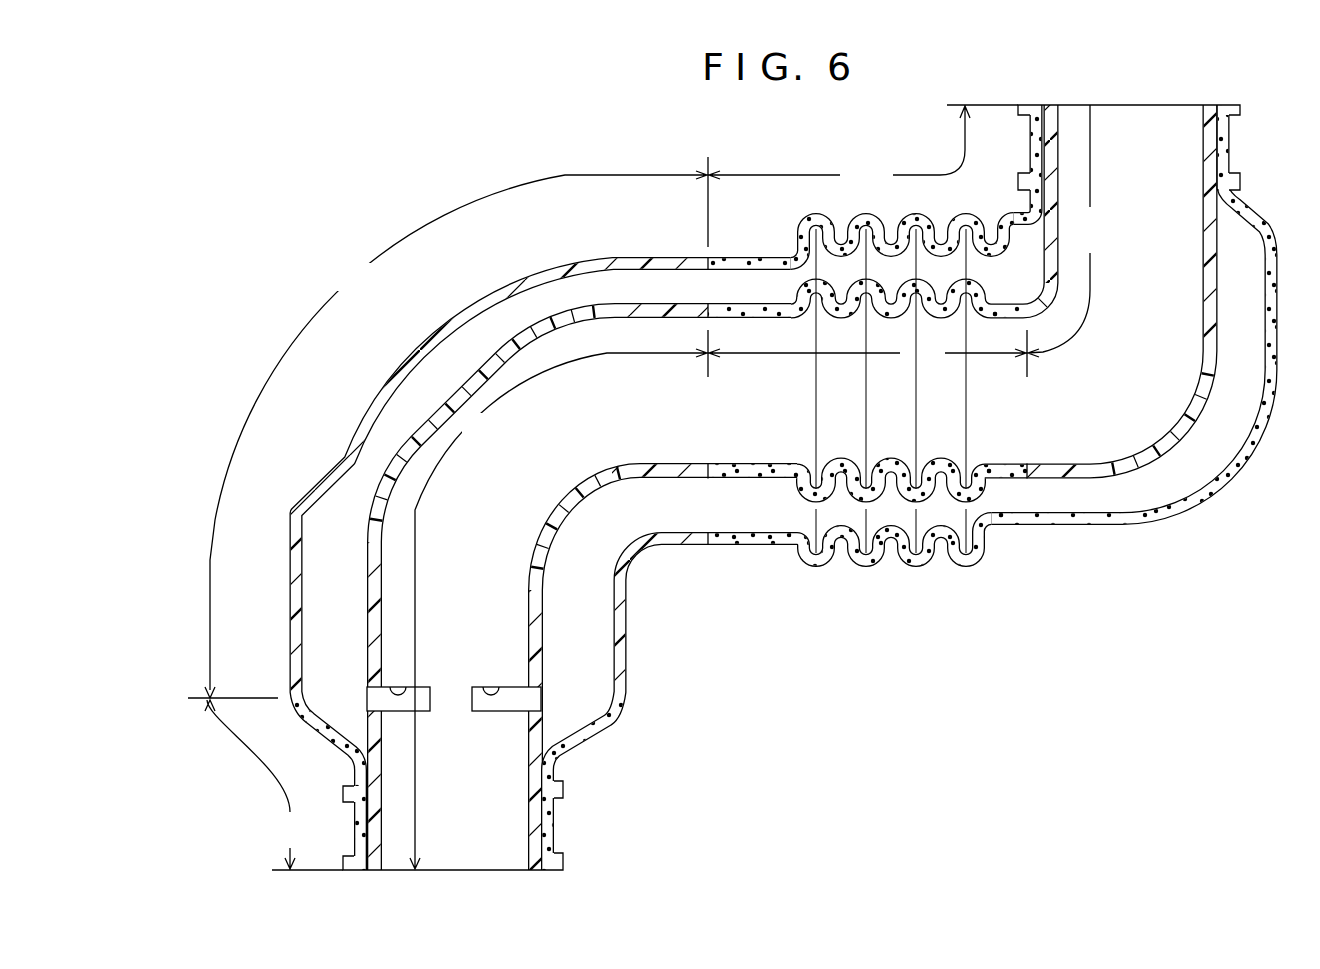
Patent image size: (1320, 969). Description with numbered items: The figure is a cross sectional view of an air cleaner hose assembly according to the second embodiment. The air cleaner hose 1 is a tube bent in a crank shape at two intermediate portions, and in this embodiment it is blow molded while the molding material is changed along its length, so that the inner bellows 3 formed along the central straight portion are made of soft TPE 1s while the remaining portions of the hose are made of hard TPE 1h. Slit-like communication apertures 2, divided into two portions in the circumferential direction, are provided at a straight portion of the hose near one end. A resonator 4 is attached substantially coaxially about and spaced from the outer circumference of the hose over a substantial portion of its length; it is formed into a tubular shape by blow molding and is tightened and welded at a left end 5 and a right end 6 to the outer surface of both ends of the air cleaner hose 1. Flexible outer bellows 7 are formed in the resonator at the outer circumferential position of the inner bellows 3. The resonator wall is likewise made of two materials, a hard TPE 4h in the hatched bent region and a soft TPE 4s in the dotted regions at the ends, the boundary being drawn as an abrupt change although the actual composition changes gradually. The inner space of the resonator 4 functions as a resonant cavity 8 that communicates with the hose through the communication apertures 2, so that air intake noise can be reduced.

The air cleaner hose 1 is at (1183, 418).
The hard TPE 1h is at (764, 487).
The soft TPE 1s is at (867, 353).
The communication apertures 2 is at (485, 690).
The inner bellows 3 is at (807, 502).
The resonator 4 is at (1122, 521).
The hard TPE 4h is at (448, 434).
The soft TPE 4s is at (611, 487).
The left end 5 is at (552, 817).
The right end 6 is at (1237, 140).
The outer bellows 7 is at (868, 569).
The resonant cavity 8 is at (608, 631).